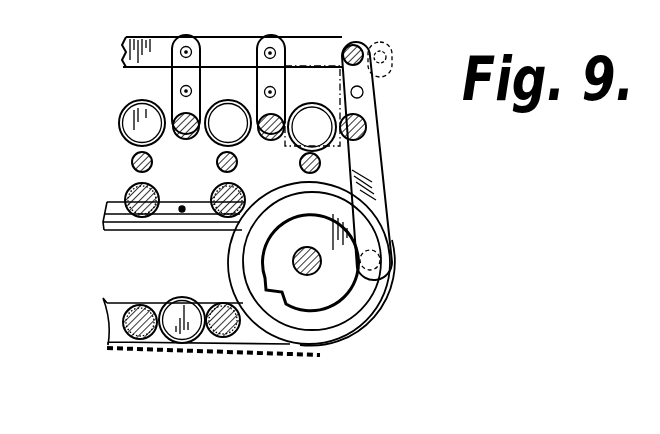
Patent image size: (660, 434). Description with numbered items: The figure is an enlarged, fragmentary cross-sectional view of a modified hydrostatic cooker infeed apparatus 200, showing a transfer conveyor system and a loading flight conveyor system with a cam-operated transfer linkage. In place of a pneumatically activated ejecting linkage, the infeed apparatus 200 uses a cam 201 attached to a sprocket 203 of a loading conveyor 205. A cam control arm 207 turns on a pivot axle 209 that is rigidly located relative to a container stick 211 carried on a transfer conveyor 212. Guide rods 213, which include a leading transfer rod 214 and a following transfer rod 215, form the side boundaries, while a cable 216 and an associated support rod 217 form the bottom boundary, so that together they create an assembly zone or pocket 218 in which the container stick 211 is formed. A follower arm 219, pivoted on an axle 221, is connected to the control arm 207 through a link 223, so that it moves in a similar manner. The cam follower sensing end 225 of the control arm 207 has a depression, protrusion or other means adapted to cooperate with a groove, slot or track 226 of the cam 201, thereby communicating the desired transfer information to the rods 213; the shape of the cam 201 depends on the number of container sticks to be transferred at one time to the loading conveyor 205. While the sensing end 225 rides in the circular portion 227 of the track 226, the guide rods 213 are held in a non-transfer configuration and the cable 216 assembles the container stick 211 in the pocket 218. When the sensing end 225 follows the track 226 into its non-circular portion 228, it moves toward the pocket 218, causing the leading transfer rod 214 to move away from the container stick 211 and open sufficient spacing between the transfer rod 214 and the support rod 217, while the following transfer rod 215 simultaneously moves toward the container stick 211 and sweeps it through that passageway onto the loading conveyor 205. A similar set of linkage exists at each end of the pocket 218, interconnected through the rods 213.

The modified infeed apparatus 200 is at (430, 184).
The cam 201 is at (237, 257).
The sprocket 203 is at (365, 316).
The loading conveyor 205 is at (163, 212).
The cam control arm 207 is at (381, 218).
The pivot axle 209 is at (363, 93).
The container stick 211 is at (313, 107).
The transfer conveyor 212 is at (313, 147).
The guide rods 213 is at (218, 143).
The leading transfer rod 214 is at (258, 123).
The following transfer rod 215 is at (368, 134).
The cable 216 is at (300, 150).
The support rod 217 is at (302, 167).
The pocket 218 is at (336, 74).
The follower arm 219 is at (262, 60).
The axle 221 is at (263, 90).
The link 223 is at (303, 42).
The cam follower sensing end 225 is at (383, 270).
The cam track 226 is at (337, 332).
The circular portion 227 is at (372, 292).
The non-circular portion 228 is at (252, 275).